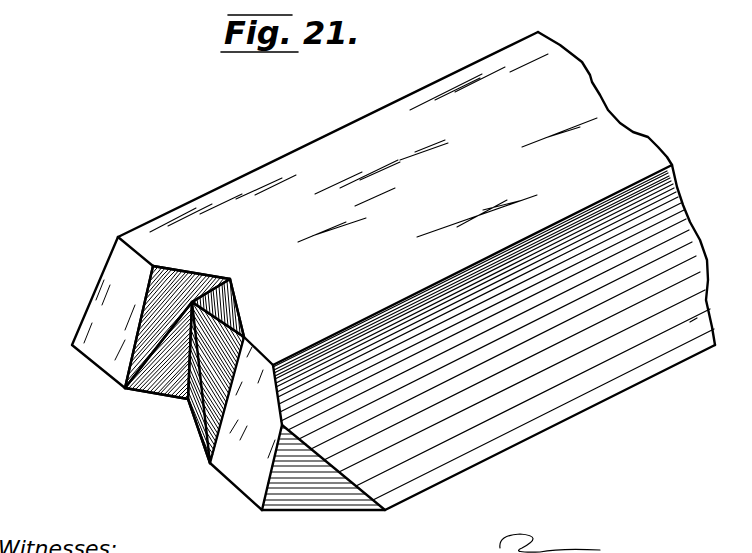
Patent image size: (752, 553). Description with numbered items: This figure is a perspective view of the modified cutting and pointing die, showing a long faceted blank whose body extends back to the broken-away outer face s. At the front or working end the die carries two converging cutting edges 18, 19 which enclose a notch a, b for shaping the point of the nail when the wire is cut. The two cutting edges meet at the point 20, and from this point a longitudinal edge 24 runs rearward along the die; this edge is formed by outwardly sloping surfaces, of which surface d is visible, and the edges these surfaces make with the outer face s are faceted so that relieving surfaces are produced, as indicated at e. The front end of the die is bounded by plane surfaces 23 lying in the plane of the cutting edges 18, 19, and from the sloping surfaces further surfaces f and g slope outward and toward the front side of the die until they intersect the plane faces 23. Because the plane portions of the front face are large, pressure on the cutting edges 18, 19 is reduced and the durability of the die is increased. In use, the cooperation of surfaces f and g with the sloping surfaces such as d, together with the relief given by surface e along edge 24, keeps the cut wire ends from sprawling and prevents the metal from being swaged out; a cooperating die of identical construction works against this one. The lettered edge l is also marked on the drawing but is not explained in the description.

The cutting edge 18 is at (127, 390).
The cutting edge 19 is at (195, 418).
The point of intersection of the cutting edges 20 is at (184, 298).
The plane end face 23 is at (240, 473).
The longitudinal edge 24 is at (234, 282).
The notch portion a is at (150, 396).
The notch portion b is at (185, 408).
The outwardly sloping surface d is at (273, 365).
The relieving surface e is at (137, 355).
The outwardly sloping surface f is at (158, 293).
The outwardly sloping surface g is at (245, 338).
The edge l is at (212, 273).
The outer face s is at (594, 102).